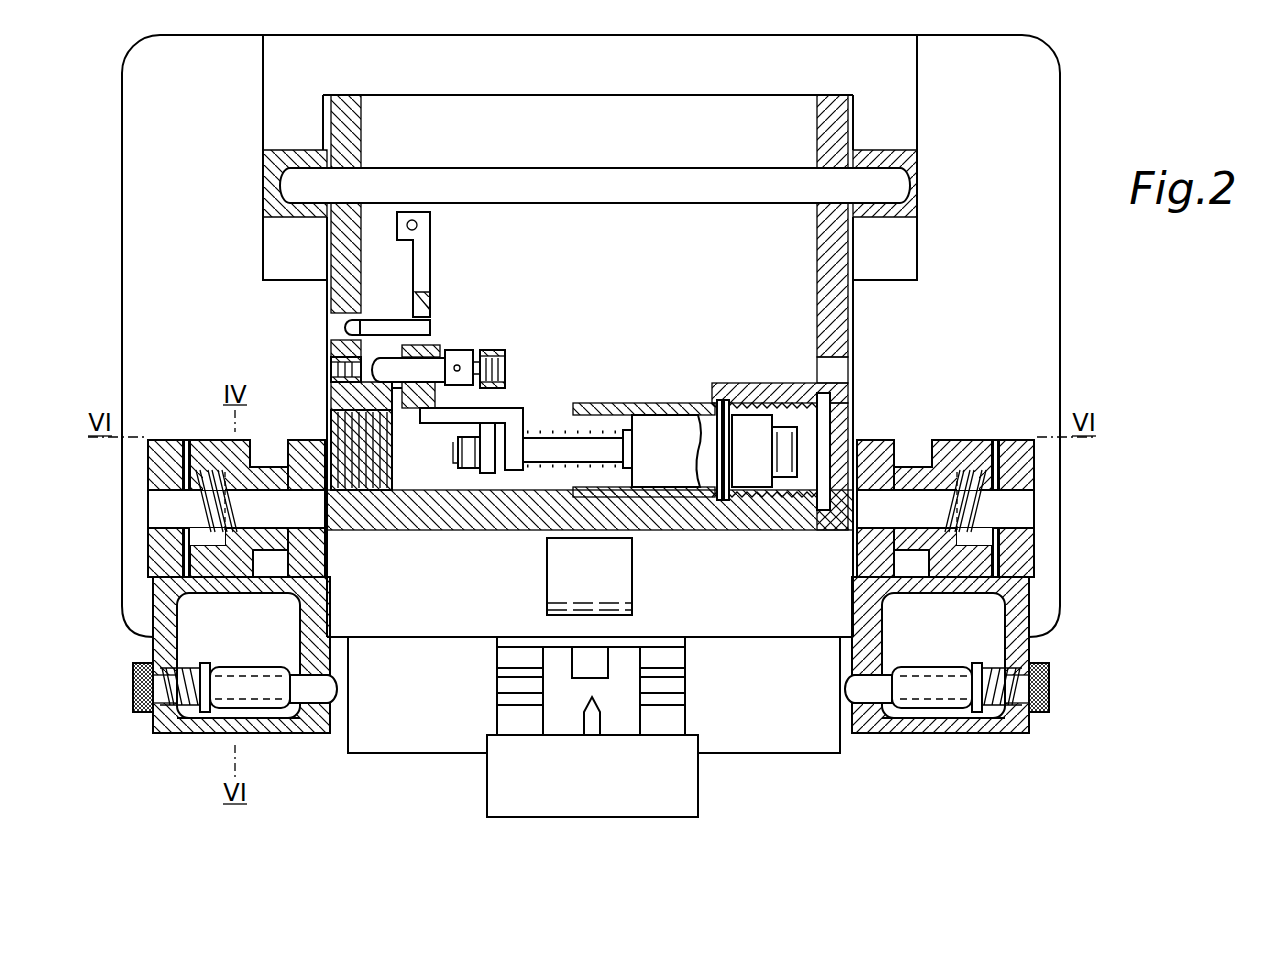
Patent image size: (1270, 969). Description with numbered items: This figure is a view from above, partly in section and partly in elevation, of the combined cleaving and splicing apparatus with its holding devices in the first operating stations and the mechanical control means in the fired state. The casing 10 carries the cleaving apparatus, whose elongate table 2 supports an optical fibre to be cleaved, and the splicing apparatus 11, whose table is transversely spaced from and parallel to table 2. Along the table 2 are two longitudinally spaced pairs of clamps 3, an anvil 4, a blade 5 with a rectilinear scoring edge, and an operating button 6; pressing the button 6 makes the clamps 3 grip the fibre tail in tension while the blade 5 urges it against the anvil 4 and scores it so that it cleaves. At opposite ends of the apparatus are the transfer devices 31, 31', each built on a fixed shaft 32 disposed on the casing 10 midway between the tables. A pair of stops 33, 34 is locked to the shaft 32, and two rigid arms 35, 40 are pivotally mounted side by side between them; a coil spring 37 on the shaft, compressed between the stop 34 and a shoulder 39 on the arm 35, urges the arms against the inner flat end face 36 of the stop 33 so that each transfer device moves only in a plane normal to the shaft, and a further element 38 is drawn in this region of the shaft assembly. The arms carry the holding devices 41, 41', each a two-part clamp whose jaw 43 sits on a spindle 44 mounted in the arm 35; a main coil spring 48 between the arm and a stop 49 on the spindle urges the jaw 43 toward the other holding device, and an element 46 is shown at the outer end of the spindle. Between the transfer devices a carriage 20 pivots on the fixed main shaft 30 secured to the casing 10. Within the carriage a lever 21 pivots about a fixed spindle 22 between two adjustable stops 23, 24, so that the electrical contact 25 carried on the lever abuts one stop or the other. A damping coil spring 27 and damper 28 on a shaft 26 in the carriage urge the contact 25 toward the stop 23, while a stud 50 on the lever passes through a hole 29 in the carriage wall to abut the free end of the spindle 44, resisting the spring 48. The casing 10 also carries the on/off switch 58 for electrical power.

The elongate table 2 is at (420, 738).
The clamps 3 is at (500, 692).
The anvil 4 is at (582, 665).
The blade 5 is at (595, 710).
The operating button 6 is at (665, 794).
The casing 10 is at (1041, 267).
The splicing apparatus 11 is at (1062, 114).
The carriage 20 is at (852, 338).
The lever 21 is at (431, 279).
The fixed spindle 22 is at (418, 228).
The adjustable stop 23 is at (331, 368).
The adjustable stop 24 is at (505, 368).
The electrical contact 25 is at (414, 356).
The shaft 26 is at (497, 455).
The damping coil spring 27 is at (545, 432).
The damper 28 is at (670, 430).
The hole 29 is at (345, 326).
The fixed main shaft 30 is at (885, 187).
The transfer device 31 is at (207, 642).
The transfer device 31' is at (988, 598).
The fixed shaft 32 is at (170, 510).
The stop 33 is at (310, 440).
The stop 34 is at (165, 438).
The rigid arm 35 is at (270, 545).
The inner flat end face 36 is at (283, 455).
The coil spring 37 is at (200, 470).
The spring 38 is at (212, 545).
The shoulder 39 is at (228, 545).
The rigid arm 40 is at (300, 541).
The holding device 41 is at (241, 752).
The holding device 41' is at (943, 746).
The jaw 43 is at (255, 667).
The spindle 44 is at (341, 688).
The knurled knob 46 is at (133, 690).
The main coil spring 48 is at (188, 706).
The stop 49 is at (205, 668).
The stud 50 is at (388, 322).
The on/off switch 58 is at (620, 581).